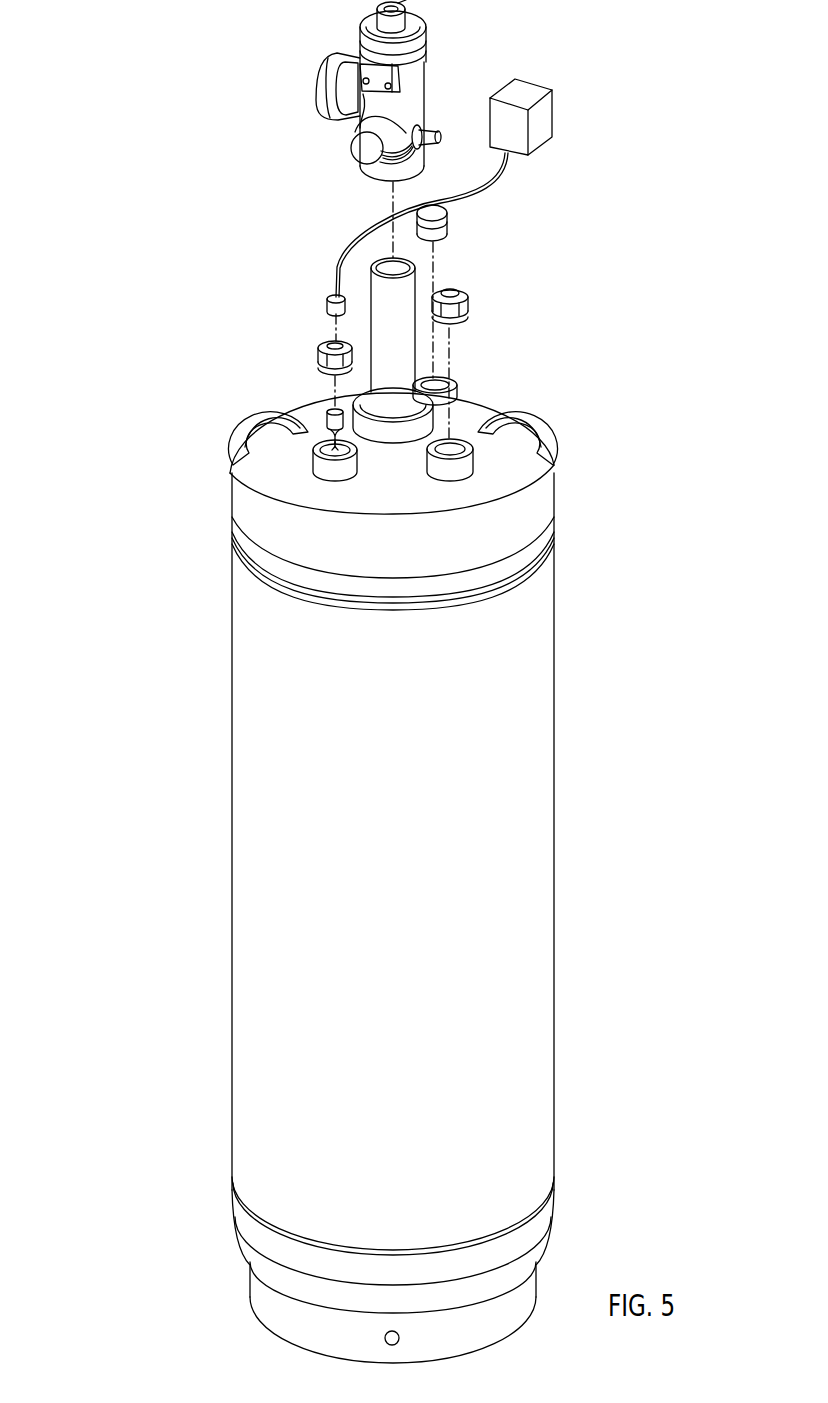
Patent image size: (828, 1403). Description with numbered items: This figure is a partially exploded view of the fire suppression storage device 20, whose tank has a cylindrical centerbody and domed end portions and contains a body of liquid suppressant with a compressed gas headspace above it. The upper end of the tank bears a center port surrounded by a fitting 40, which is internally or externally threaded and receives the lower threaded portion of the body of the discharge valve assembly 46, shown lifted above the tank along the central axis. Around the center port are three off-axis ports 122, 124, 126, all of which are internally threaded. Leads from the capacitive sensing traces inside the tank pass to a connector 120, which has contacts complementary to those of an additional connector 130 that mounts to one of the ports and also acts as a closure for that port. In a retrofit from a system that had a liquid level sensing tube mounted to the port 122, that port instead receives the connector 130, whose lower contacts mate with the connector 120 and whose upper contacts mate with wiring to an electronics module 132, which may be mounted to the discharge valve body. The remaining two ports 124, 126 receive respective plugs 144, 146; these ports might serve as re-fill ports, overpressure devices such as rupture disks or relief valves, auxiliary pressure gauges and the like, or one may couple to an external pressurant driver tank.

The fire suppression storage device 20 is at (96, 214).
The fitting 40 is at (393, 437).
The discharge valve assembly 46 is at (456, 78).
The connector 120 is at (318, 412).
The off-axis port 122 is at (323, 470).
The off-axis port 124 is at (462, 468).
The off-axis port 126 is at (460, 396).
The connector 130 is at (298, 355).
The electronics module 132 is at (542, 118).
The plug 144 is at (480, 301).
The plug 146 is at (470, 212).